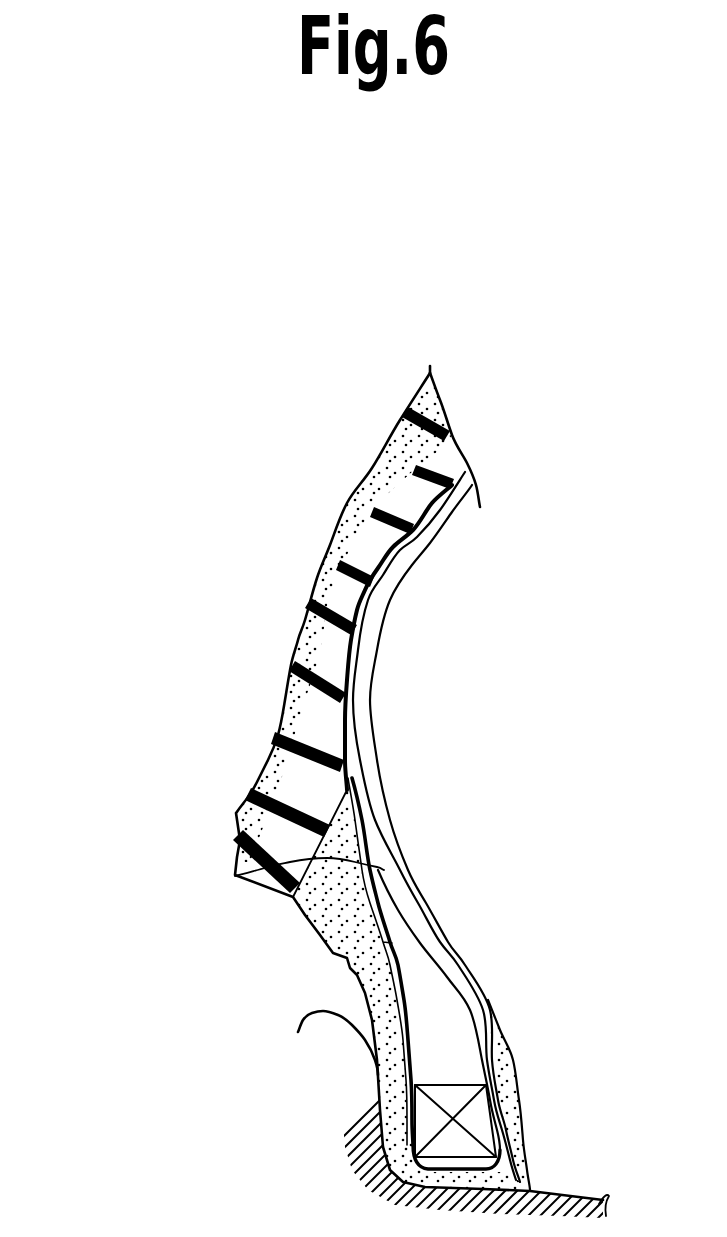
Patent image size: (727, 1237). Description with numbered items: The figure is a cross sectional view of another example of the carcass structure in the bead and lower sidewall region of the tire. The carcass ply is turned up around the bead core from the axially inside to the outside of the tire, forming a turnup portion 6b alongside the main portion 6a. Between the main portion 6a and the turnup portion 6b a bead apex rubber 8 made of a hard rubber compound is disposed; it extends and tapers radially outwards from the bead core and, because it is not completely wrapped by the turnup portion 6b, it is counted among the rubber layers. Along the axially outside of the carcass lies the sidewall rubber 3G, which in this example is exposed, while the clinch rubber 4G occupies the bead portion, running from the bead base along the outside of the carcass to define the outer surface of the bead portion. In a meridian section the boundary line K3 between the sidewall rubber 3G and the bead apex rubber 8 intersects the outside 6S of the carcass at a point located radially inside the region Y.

The sidewall rubber 3G is at (263, 832).
The boundary line K3 is at (345, 773).
The outside of the carcass 6S is at (235, 877).
The clinch rubber 4G is at (333, 934).
The bead apex rubber 8 is at (427, 962).
The main portion 6a is at (465, 995).
The turnup portion 6b is at (405, 1041).